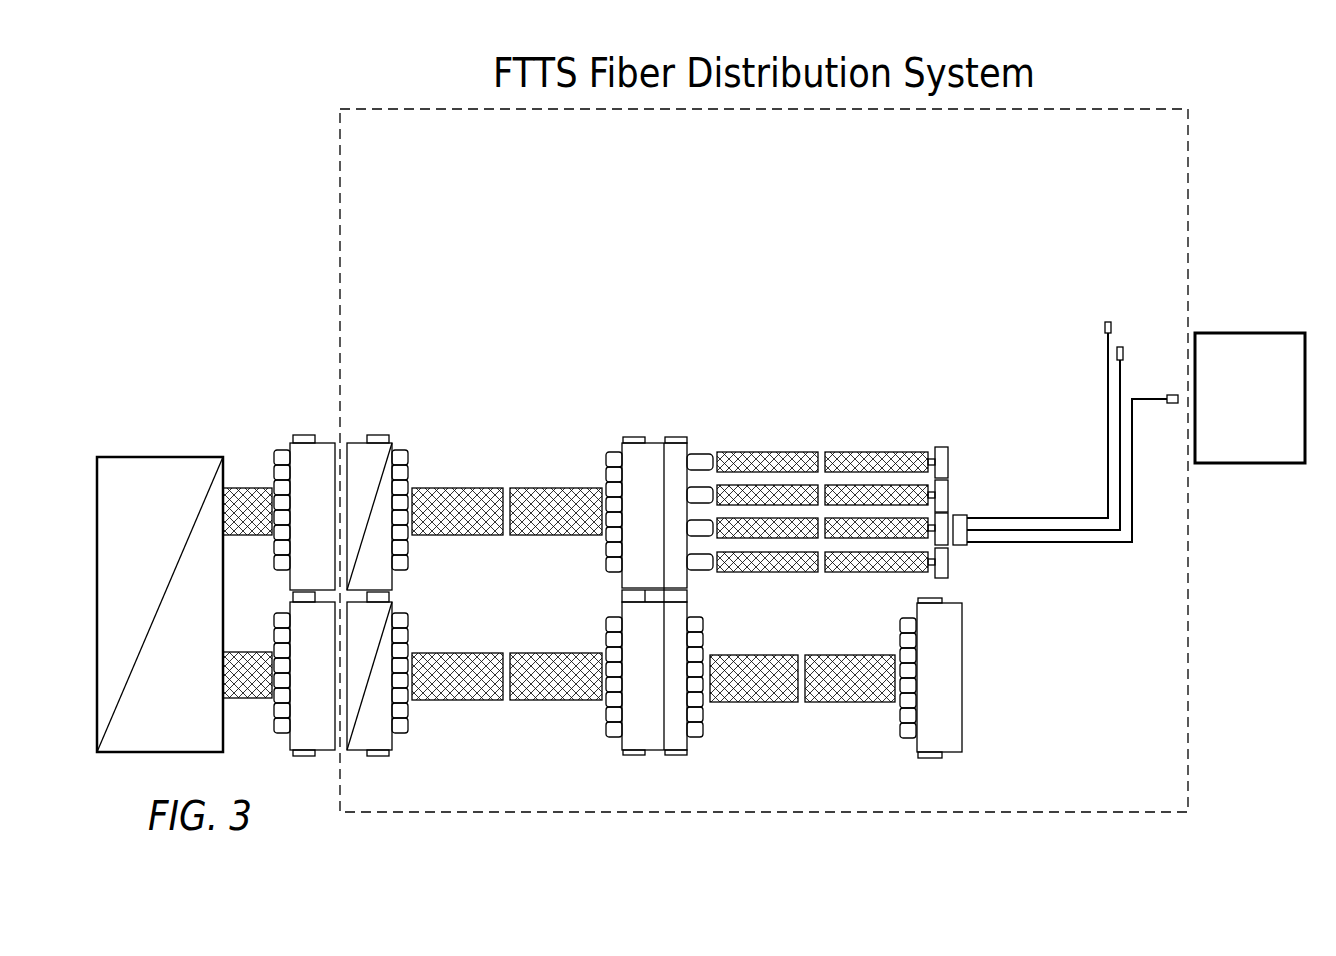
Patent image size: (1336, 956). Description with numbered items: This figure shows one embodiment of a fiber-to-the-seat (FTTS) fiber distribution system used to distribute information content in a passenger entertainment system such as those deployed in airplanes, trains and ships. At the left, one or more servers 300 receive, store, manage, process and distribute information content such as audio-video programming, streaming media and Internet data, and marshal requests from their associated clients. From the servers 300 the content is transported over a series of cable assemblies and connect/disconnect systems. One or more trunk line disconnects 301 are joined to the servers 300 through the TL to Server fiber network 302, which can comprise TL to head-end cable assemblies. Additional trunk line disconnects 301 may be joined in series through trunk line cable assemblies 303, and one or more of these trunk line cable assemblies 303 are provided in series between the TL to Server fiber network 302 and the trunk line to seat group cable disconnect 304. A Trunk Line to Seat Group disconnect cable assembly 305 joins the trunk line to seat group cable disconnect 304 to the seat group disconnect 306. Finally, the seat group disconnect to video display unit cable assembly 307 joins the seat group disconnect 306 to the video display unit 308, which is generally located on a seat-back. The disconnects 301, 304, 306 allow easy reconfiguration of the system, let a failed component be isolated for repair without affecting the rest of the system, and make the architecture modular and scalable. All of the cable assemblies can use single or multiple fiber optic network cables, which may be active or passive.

The servers 300 is at (150, 456).
The trunk line disconnect 301 is at (632, 437).
The TL to Server fiber network 302 is at (272, 448).
The trunk line cable assembly 303 is at (610, 416).
The trunk line to seat group cable disconnect 304 is at (675, 435).
The Trunk Line to Seat Group disconnect cable assembly 305 is at (680, 416).
The seat group disconnect 306 is at (953, 487).
The seat group disconnect to video display unit cable assembly 307 is at (907, 265).
The video display unit 308 is at (1248, 332).